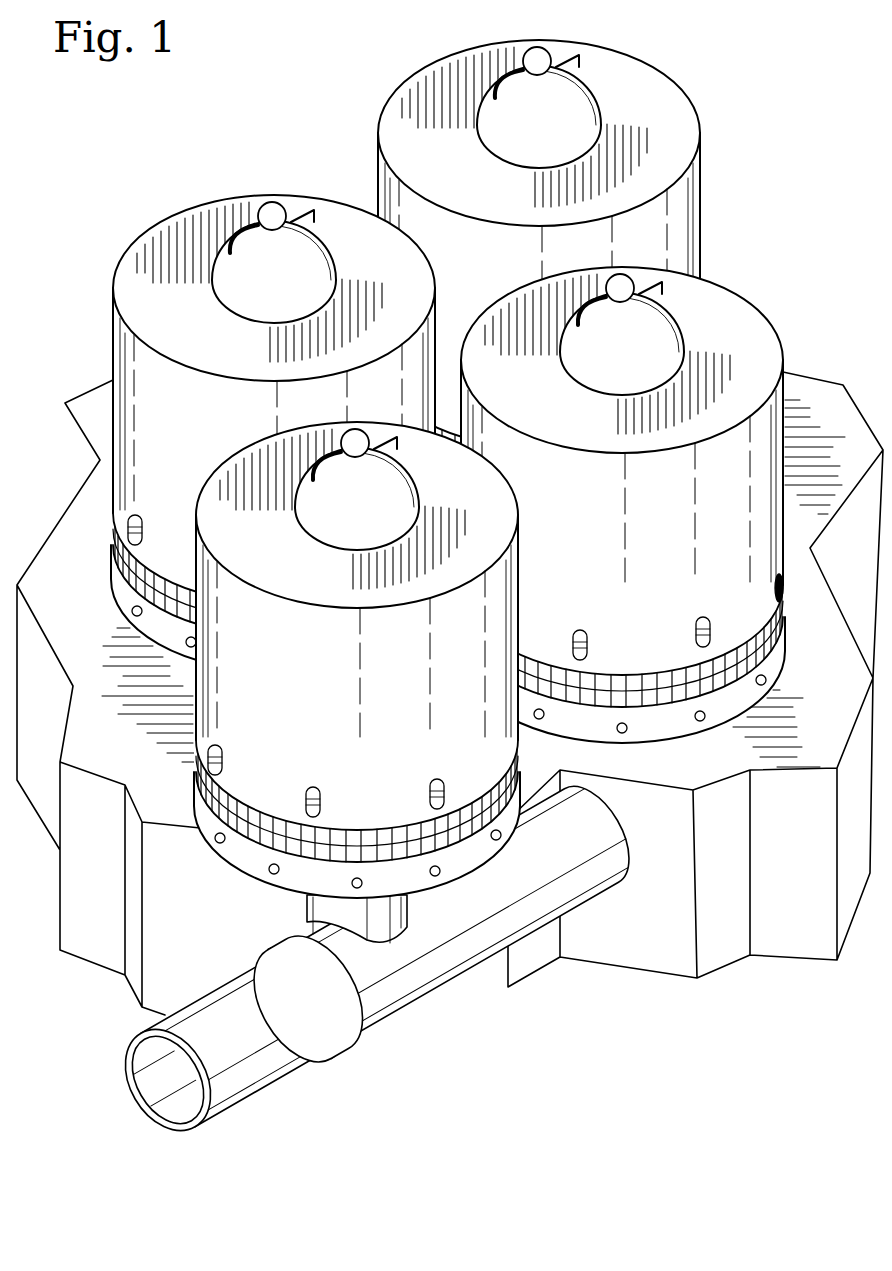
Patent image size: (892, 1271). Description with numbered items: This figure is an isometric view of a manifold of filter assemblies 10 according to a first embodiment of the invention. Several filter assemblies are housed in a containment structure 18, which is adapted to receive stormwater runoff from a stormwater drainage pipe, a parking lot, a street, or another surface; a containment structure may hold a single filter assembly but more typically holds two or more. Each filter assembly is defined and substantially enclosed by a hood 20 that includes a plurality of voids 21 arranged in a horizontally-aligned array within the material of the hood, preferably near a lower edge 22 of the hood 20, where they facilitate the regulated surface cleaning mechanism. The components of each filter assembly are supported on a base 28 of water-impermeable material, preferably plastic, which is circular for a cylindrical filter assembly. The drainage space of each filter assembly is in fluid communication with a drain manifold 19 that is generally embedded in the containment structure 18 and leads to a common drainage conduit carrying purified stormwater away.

The manifold of filter assemblies 10 is at (731, 55).
The containment structure 18 is at (124, 761).
The drain manifold 19 is at (272, 1065).
The hood 20 is at (335, 675).
The voids 21 is at (326, 767).
The lower edge 22 is at (334, 801).
The base 28 is at (357, 850).